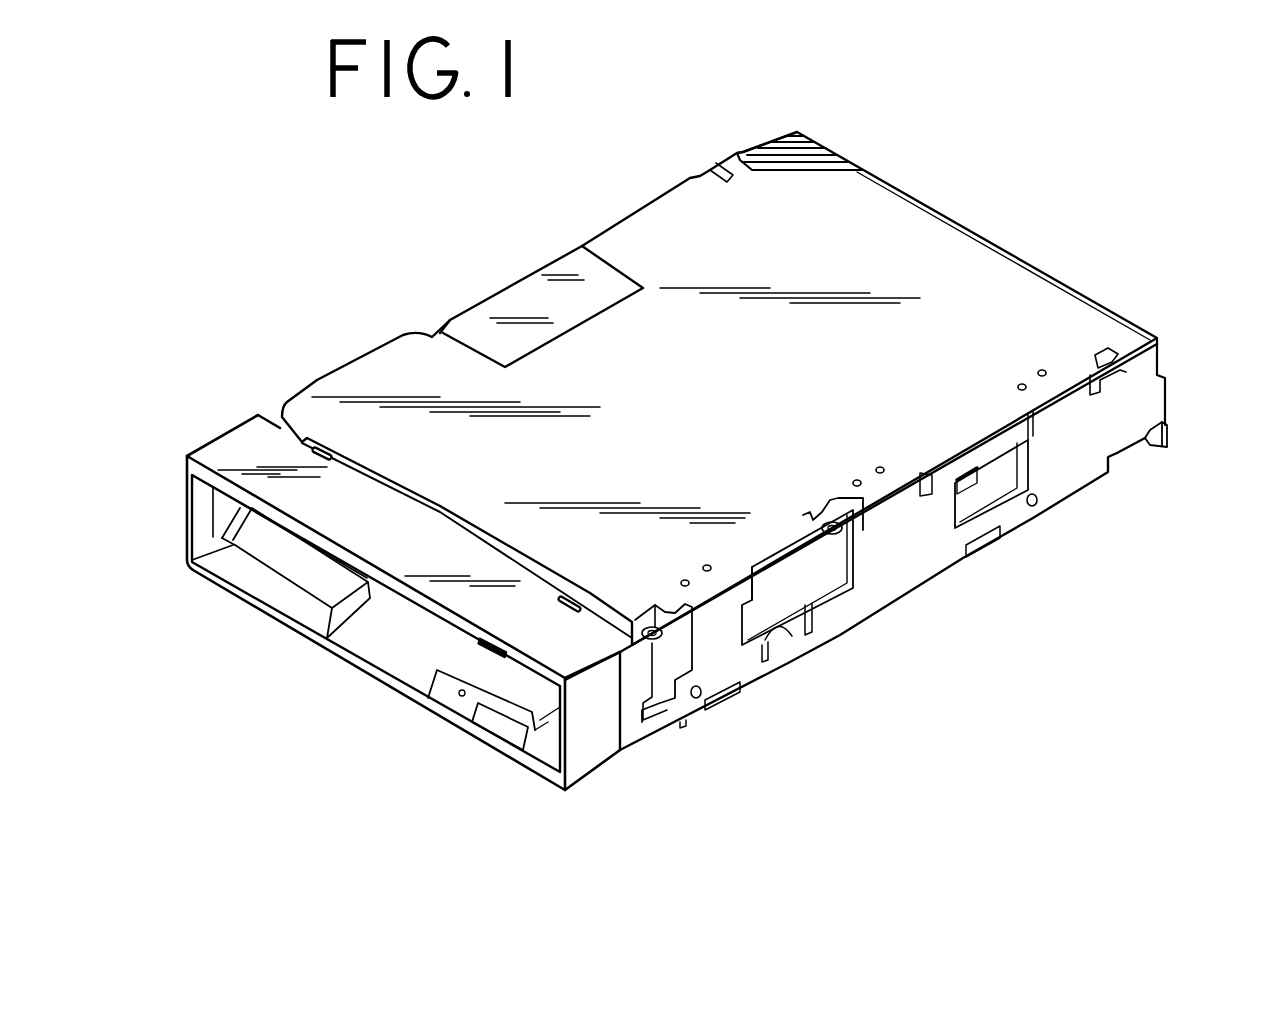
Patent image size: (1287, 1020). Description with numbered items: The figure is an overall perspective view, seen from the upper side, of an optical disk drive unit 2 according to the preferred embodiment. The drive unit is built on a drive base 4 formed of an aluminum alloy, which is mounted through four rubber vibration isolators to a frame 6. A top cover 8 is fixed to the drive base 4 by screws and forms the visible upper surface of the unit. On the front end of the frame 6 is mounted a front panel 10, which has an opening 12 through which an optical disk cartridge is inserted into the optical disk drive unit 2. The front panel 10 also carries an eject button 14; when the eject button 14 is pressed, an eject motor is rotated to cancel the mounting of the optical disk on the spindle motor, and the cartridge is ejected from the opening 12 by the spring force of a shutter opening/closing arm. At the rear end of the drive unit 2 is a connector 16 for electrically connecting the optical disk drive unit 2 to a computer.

The optical disk drive unit 2 is at (524, 252).
The drive base 4 is at (978, 497).
The frame 6 is at (853, 618).
The top cover 8 is at (782, 180).
The front panel 10 is at (583, 764).
The opening 12 is at (382, 653).
The eject button 14 is at (498, 735).
The connector 16 is at (1153, 356).